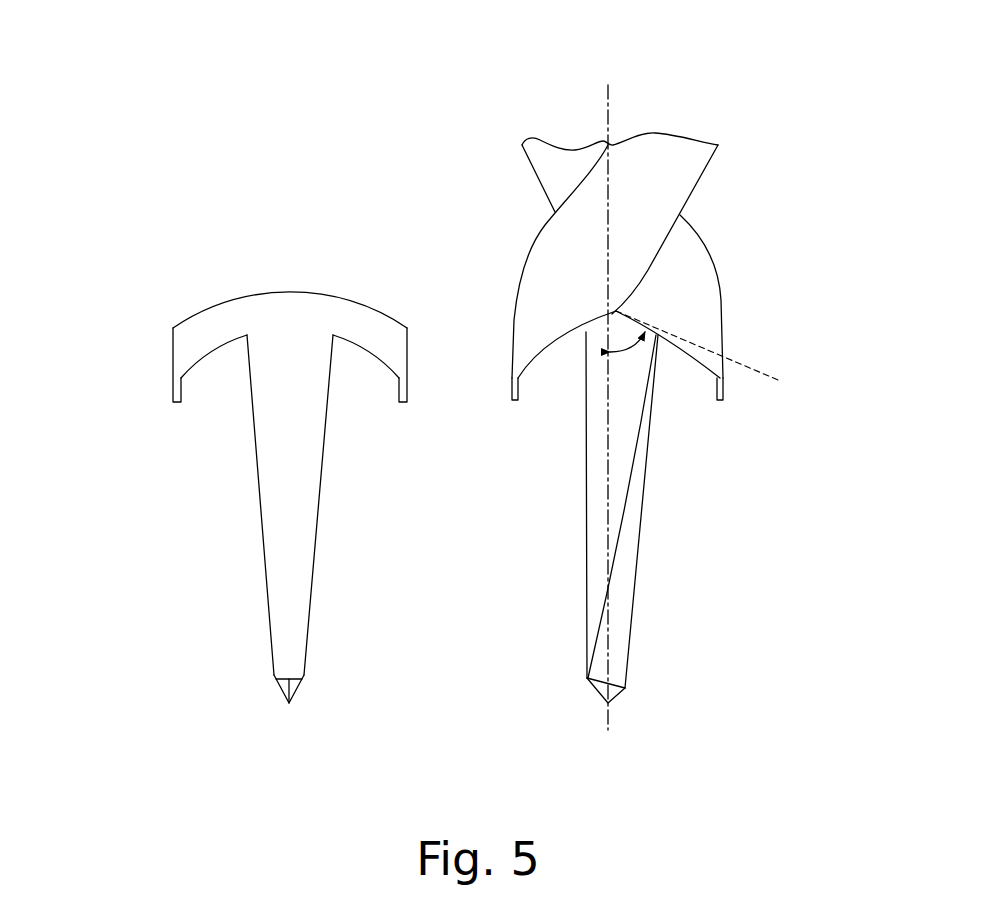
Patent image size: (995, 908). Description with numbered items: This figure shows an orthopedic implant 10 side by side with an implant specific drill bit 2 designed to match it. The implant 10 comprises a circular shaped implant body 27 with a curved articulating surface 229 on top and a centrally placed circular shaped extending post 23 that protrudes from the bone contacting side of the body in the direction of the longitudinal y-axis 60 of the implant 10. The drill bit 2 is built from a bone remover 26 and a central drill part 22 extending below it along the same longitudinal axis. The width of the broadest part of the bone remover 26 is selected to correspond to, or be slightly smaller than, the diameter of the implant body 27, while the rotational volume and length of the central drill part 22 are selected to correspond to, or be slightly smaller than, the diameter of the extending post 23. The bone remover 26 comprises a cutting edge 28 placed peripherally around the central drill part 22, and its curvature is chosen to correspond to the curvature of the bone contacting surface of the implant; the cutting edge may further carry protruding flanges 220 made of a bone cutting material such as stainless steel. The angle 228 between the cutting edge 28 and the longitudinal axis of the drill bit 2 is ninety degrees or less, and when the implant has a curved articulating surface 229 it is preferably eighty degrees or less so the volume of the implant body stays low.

The orthopedic implant 10 is at (130, 265).
The implant body 27 is at (213, 315).
The curved articulating surface 229 is at (288, 292).
The cutting edge 28 is at (363, 343).
The protruding flanges 220 is at (408, 385).
The extending post 23 is at (297, 568).
The implant specific drill bit 2 is at (757, 173).
The longitudinal y-axis 60 is at (608, 90).
The bone remover 26 is at (686, 275).
The angle 228 is at (637, 348).
The central drill part 22 is at (608, 535).